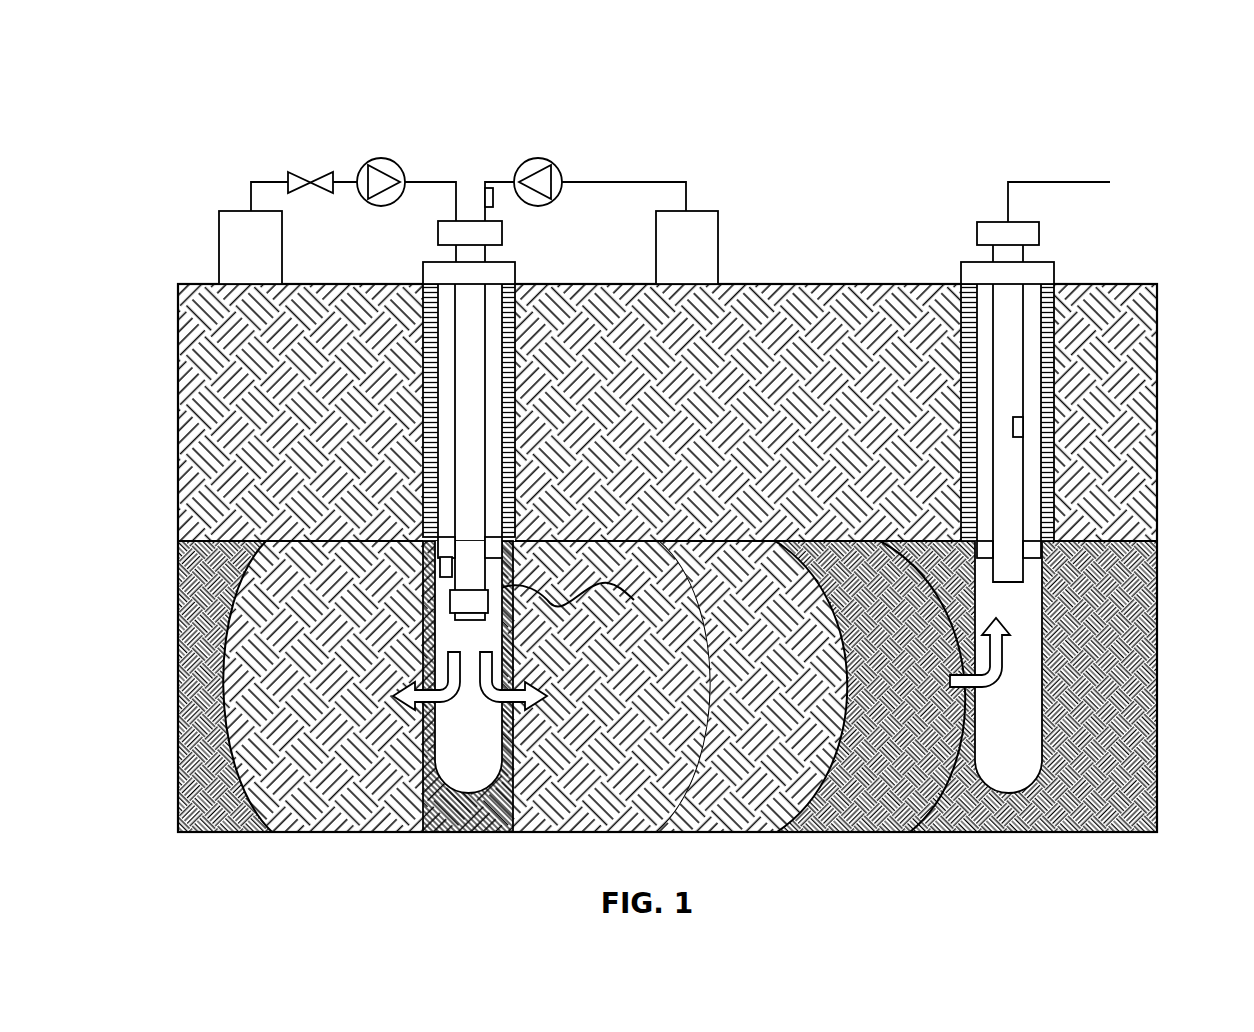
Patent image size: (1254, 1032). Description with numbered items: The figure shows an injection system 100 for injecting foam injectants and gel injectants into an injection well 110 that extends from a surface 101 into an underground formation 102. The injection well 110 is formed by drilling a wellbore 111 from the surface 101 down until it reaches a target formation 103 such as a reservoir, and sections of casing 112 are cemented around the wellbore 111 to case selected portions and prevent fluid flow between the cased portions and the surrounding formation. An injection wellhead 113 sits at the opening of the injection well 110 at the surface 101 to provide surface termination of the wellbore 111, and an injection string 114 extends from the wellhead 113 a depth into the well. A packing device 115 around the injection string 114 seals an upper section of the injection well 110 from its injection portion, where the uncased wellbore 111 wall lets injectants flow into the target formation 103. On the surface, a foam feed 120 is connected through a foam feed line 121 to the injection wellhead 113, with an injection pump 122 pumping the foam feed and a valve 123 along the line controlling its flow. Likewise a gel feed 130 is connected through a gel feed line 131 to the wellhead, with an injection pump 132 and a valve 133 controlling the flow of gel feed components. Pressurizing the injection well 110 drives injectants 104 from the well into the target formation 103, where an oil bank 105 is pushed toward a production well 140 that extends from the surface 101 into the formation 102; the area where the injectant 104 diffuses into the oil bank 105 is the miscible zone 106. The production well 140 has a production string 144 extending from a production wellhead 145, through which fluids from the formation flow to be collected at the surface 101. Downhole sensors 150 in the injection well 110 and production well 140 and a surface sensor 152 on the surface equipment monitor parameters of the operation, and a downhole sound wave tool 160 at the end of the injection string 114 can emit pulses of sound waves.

The system 100 is at (201, 73).
The surface 101 is at (830, 284).
The formation 102 is at (593, 477).
The target formation 103 is at (198, 822).
The injectants 104 is at (588, 748).
The oil bank 105 is at (878, 748).
The miscible zone 106 is at (742, 748).
The injection well 110 is at (458, 156).
The wellbore 111 is at (483, 792).
The casing 112 is at (427, 322).
The injection wellhead 113 is at (503, 262).
The injection string 114 is at (455, 361).
The packing device 115 is at (437, 545).
The foam feed 120 is at (229, 267).
The foam feed line 121 is at (251, 182).
The injection pump 122 is at (381, 158).
The valve 123 is at (297, 172).
The gel feed 130 is at (666, 267).
The gel feed line 131 is at (668, 182).
The injection pump 132 is at (538, 157).
The valve 133 is at (608, 182).
The production well 140 is at (991, 191).
The production string 144 is at (1018, 323).
The production wellhead 145 is at (970, 262).
The downhole sensor 150 is at (443, 563).
The surface sensor 152 is at (487, 188).
The downhole sound wave tool 160 is at (465, 607).